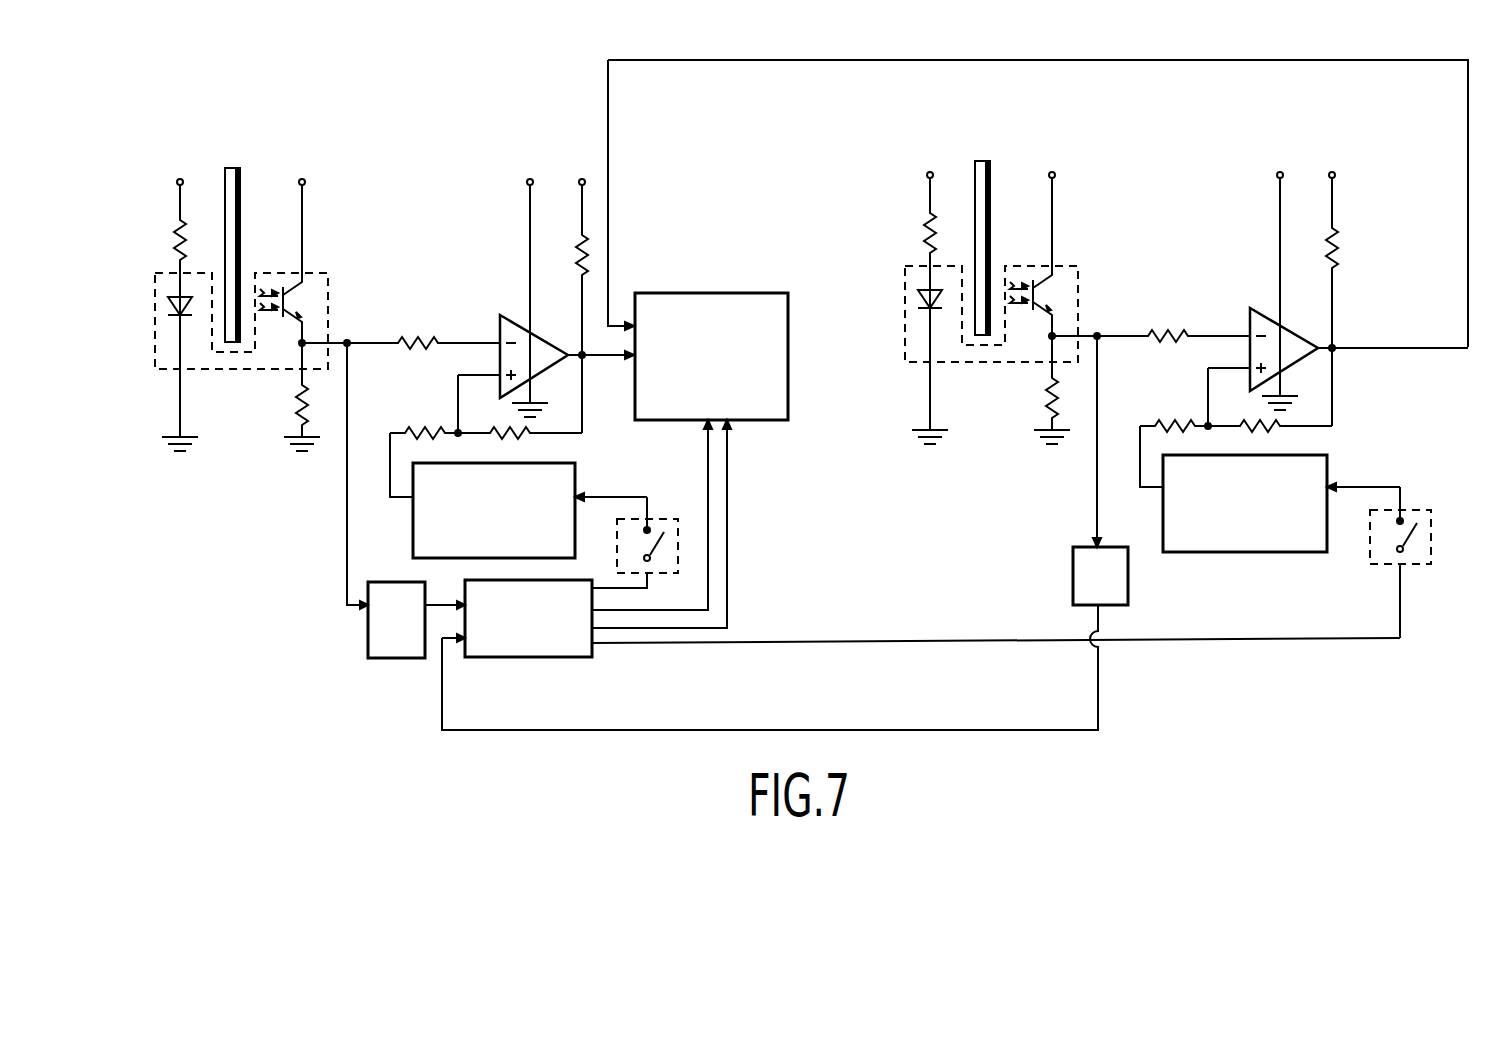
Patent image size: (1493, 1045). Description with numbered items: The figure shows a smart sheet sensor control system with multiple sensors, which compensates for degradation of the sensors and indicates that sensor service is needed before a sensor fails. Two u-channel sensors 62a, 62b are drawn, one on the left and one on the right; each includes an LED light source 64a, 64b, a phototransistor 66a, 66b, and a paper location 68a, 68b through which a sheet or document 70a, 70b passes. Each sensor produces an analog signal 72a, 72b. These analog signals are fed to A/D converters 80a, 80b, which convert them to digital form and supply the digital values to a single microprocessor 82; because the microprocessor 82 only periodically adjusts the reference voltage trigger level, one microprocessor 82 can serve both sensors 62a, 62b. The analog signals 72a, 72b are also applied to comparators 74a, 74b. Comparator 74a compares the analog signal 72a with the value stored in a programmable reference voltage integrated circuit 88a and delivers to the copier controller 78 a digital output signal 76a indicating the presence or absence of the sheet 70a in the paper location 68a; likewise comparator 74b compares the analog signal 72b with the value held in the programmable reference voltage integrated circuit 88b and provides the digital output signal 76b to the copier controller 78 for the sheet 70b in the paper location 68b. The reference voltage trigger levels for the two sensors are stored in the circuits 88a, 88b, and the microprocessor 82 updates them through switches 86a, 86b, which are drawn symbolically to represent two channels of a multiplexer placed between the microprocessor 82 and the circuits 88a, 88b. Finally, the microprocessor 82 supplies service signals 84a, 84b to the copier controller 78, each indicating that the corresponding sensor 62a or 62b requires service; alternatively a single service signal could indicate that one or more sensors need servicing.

The u-channel sensor 62a is at (152, 362).
The u-channel sensor 62b is at (964, 358).
The LED light source 64a is at (170, 308).
The LED light source 64b is at (901, 294).
The phototransistor 66a is at (305, 300).
The phototransistor 66b is at (1076, 294).
The paper location 68a is at (247, 262).
The paper location 68b is at (1021, 222).
The sheet or document 70a is at (232, 168).
The sheet or document 70b is at (1005, 213).
The analog signal 72a is at (347, 343).
The analog signal 72b is at (1149, 412).
The comparator 74a is at (500, 316).
The comparator 74b is at (1263, 284).
The digital output signal 76a is at (585, 358).
The digital output signal 76b is at (1391, 284).
The copier controller 78 is at (706, 292).
The A/D converter 80a is at (395, 660).
The A/D converter 80b is at (1073, 552).
The microprocessor 82 is at (556, 658).
The service signal 84a is at (708, 483).
The service signal 84b is at (728, 498).
The switch 86a is at (678, 573).
The switch 86b is at (1431, 540).
The programmable reference voltage integrated circuit 88a is at (577, 484).
The programmable reference voltage integrated circuit 88b is at (1276, 486).